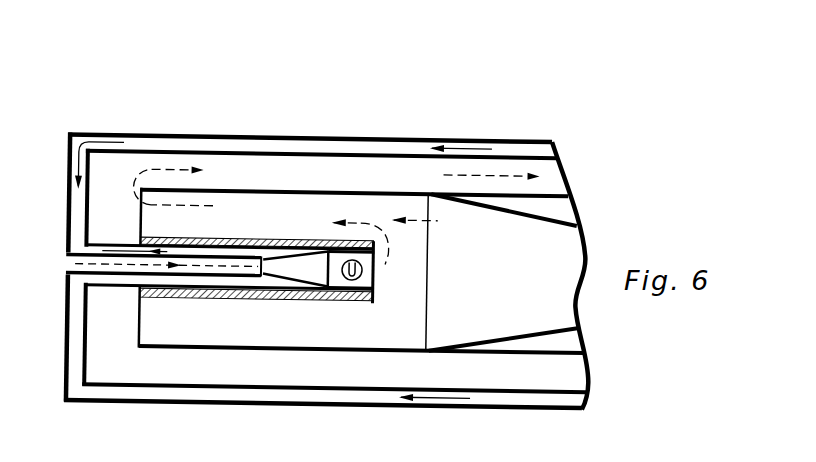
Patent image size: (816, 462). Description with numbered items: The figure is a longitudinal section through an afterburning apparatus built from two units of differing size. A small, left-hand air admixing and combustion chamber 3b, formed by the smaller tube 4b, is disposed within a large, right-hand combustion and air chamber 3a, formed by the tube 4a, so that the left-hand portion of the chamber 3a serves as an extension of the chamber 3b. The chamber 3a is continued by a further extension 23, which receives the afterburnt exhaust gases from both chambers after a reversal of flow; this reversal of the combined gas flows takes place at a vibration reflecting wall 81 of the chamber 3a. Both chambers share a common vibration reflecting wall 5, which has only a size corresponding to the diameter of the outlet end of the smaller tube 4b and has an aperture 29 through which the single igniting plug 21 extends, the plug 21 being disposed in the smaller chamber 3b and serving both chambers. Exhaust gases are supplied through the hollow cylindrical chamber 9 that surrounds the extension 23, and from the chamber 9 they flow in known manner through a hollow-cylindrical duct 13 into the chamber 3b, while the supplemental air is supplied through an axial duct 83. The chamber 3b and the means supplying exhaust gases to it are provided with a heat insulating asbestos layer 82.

The hollow cylindrical chamber 9 is at (372, 133).
The vibration reflecting wall 81 is at (88, 182).
The extension 23 is at (309, 183).
The tube 4a is at (237, 191).
The air admixing and combustion chamber 3a is at (510, 297).
The hollow-cylindrical duct 13 is at (187, 245).
The heat insulating asbestos layer 82 is at (233, 294).
The axial duct 83 is at (192, 272).
The tube 4b is at (287, 253).
The air admixing and combustion chamber 3b is at (331, 285).
The vibration reflecting wall 5 is at (375, 286).
The igniting plug 21 is at (354, 277).
The aperture 29 is at (357, 256).